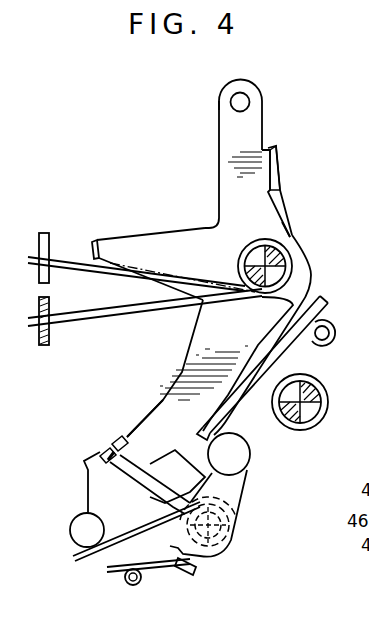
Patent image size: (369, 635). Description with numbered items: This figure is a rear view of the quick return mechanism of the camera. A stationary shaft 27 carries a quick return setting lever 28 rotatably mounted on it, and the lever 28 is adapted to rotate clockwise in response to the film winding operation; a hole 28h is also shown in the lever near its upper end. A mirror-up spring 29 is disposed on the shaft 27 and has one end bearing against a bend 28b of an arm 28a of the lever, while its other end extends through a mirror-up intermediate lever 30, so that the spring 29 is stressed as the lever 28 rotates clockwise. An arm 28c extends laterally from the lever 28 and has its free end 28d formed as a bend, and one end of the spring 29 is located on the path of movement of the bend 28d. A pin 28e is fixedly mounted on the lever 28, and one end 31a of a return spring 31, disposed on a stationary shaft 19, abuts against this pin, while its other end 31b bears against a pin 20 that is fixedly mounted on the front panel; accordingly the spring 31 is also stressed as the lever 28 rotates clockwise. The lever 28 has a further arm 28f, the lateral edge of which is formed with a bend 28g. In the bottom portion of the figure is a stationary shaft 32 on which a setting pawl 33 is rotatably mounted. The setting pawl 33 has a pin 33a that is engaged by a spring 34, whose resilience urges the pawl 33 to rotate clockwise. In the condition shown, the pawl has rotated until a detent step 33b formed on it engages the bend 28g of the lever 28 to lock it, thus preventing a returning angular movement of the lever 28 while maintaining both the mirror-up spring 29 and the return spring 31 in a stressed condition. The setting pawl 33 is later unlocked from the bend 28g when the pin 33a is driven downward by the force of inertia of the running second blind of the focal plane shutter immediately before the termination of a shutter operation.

The stationary shaft 19 is at (302, 405).
The pin 20 is at (331, 334).
The stationary shaft 27 is at (278, 272).
The quick return setting lever 28 is at (208, 228).
The arm 28a is at (219, 103).
The bend 28b is at (278, 170).
The arm 28c is at (147, 240).
The bend 28d is at (97, 238).
The pin 28e is at (250, 455).
The arm 28f is at (162, 410).
The bend 28g is at (106, 448).
The hole in arm 28h is at (256, 100).
The mirror-up spring 29 is at (290, 230).
The mirror-up intermediate lever 30 is at (50, 338).
The return spring 31 is at (306, 346).
The end of return spring 31a is at (205, 432).
The other end of return spring 31b is at (327, 310).
The stationary shaft 32 is at (238, 533).
The setting pawl 33 is at (92, 486).
The pin 33a is at (75, 530).
The detent step 33b is at (112, 462).
The spring 34 is at (150, 532).